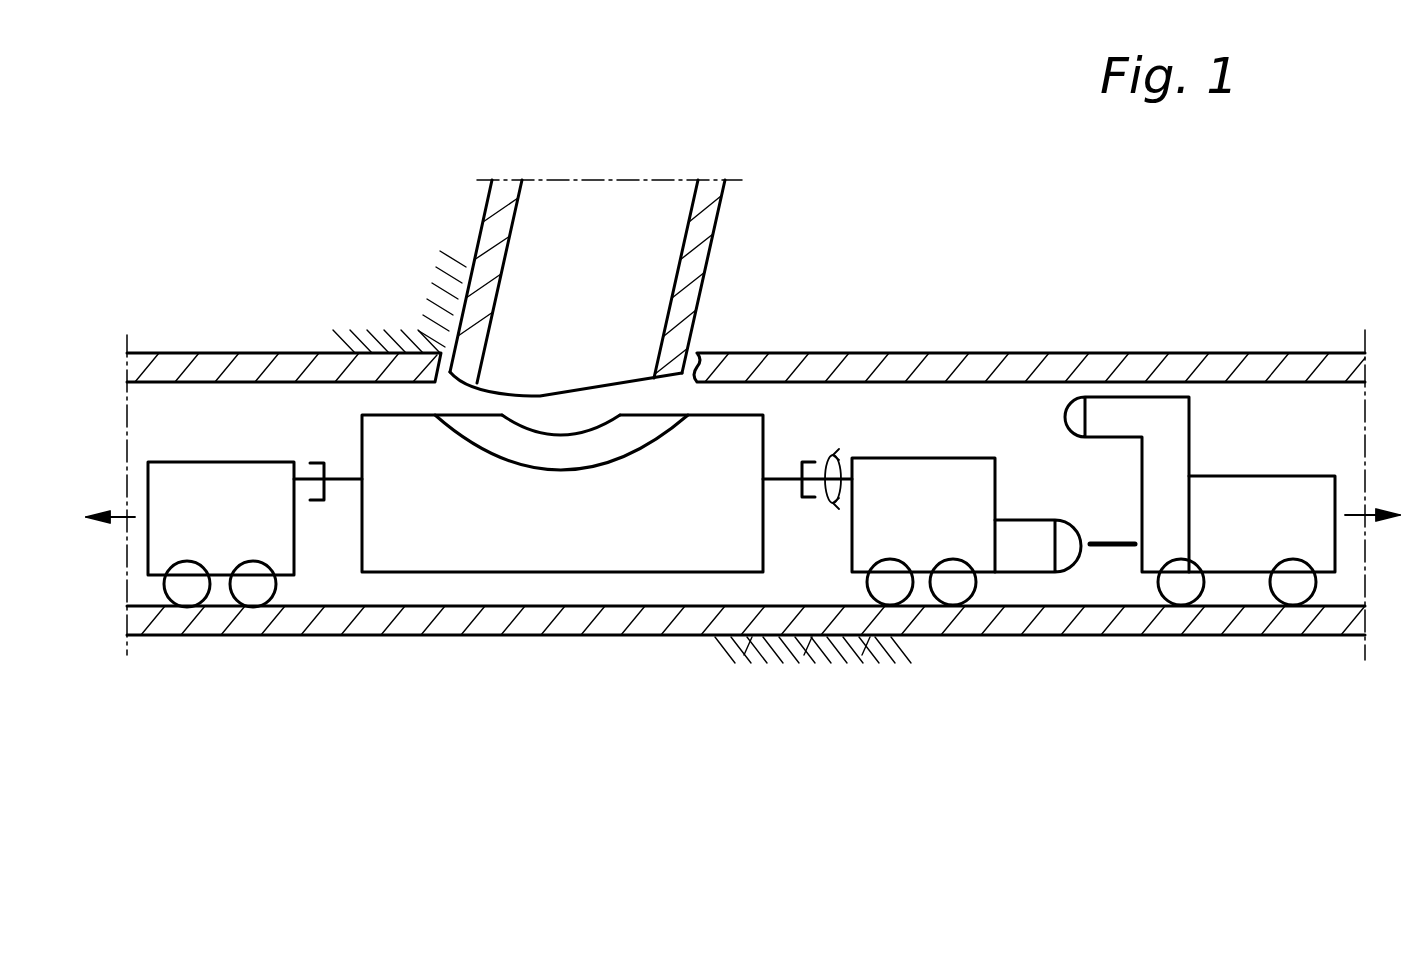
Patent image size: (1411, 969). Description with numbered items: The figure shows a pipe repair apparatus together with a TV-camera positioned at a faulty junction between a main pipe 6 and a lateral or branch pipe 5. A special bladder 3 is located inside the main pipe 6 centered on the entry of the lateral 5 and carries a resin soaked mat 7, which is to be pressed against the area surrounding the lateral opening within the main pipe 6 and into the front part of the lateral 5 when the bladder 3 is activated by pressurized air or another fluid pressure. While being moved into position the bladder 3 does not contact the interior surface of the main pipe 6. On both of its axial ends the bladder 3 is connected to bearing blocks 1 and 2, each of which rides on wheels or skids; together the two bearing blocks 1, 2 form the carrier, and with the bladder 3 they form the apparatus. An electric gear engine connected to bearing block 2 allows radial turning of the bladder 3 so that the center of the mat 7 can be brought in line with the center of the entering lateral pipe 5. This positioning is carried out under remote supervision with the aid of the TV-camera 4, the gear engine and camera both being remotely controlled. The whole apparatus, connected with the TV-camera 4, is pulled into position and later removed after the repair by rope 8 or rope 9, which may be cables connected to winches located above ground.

The bearing block 1 is at (212, 492).
The bearing block 2 is at (907, 495).
The bladder 3 is at (585, 485).
The TV-camera 4 is at (1163, 421).
The lateral or branch pipe 5 is at (513, 243).
The main pipe 6 is at (1060, 368).
The resin soaked mat 7 is at (520, 443).
The rope 8 is at (1370, 514).
The rope 9 is at (115, 516).